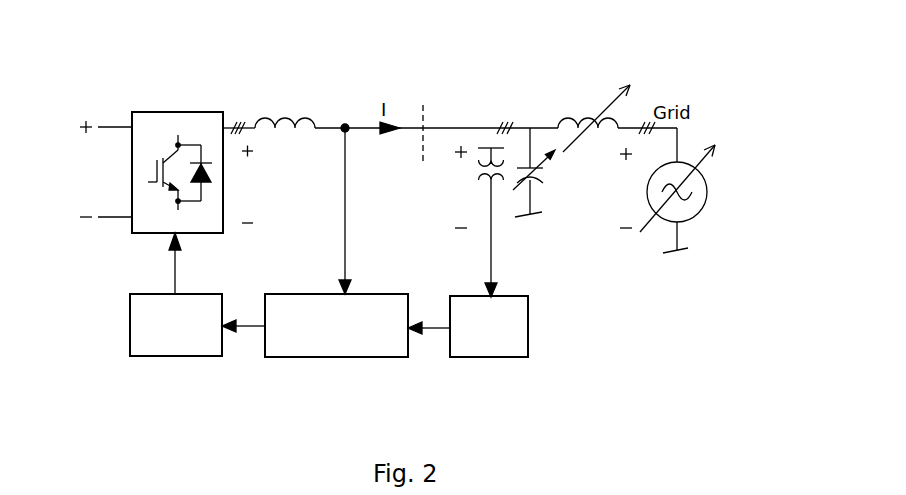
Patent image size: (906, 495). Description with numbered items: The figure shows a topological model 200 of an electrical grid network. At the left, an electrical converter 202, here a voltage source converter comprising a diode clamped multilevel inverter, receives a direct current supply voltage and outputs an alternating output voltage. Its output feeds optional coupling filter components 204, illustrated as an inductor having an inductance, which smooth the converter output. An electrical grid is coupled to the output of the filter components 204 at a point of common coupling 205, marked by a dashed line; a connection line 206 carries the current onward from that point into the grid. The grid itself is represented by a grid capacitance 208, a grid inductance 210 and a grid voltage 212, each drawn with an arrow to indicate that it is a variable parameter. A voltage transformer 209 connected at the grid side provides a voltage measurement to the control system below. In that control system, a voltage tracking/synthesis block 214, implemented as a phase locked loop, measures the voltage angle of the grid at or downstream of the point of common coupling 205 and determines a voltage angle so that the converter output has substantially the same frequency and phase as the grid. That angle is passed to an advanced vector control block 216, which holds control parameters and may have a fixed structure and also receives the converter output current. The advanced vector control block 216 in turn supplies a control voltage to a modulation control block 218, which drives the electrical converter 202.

The topological model 200 is at (108, 83).
The electrical converter 202 is at (183, 112).
The coupling filter components 204 is at (268, 116).
The point of common coupling 205 is at (418, 128).
The connection line to grid 206 is at (492, 128).
The capacitance Cg 208 is at (546, 180).
The voltage transformer 209 is at (498, 177).
The inductance Lg 210 is at (573, 116).
The grid voltage Vg 212 is at (707, 175).
The voltage tracking/synthesis block 214 is at (488, 358).
The advanced vector control block 216 is at (337, 357).
The modulation control block 218 is at (175, 357).